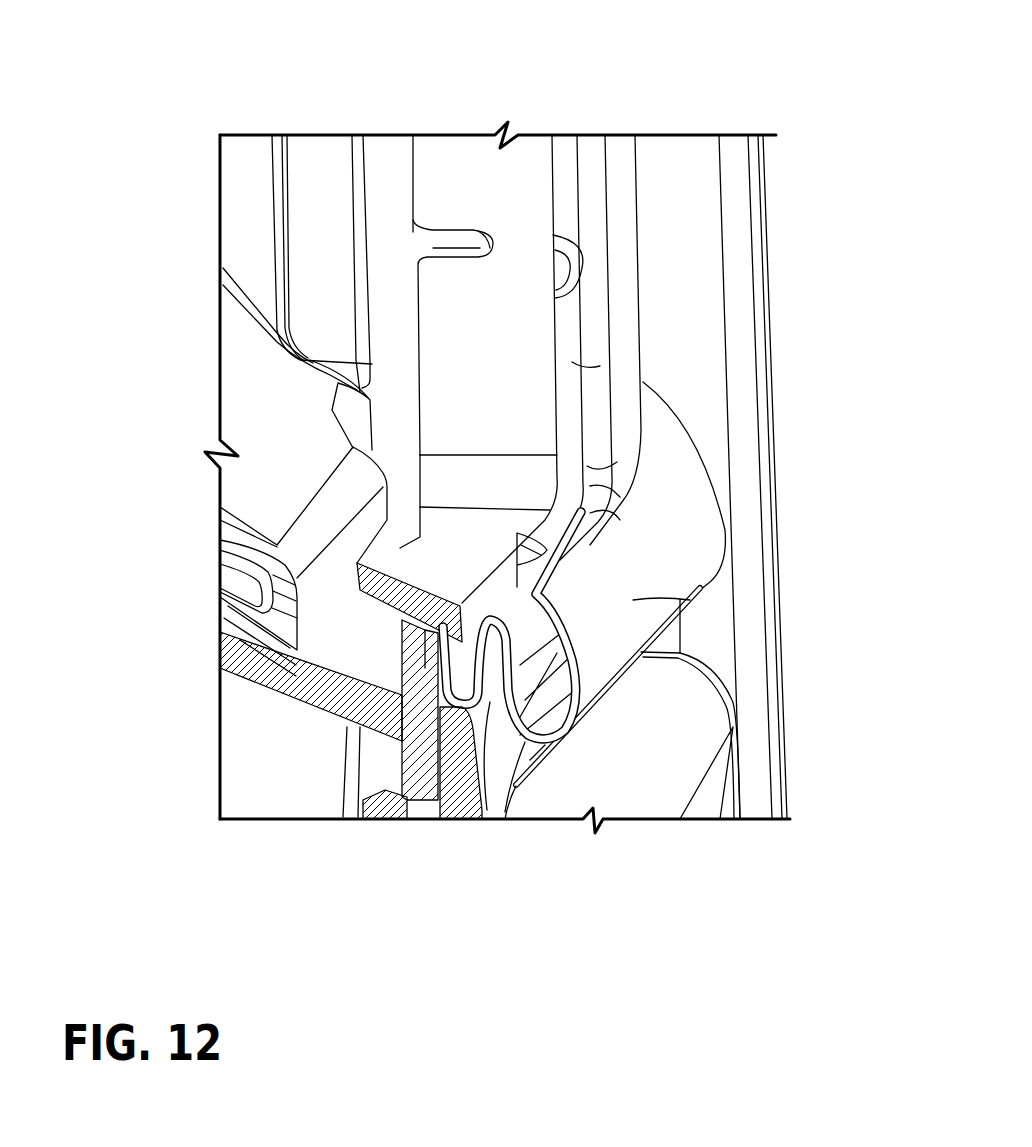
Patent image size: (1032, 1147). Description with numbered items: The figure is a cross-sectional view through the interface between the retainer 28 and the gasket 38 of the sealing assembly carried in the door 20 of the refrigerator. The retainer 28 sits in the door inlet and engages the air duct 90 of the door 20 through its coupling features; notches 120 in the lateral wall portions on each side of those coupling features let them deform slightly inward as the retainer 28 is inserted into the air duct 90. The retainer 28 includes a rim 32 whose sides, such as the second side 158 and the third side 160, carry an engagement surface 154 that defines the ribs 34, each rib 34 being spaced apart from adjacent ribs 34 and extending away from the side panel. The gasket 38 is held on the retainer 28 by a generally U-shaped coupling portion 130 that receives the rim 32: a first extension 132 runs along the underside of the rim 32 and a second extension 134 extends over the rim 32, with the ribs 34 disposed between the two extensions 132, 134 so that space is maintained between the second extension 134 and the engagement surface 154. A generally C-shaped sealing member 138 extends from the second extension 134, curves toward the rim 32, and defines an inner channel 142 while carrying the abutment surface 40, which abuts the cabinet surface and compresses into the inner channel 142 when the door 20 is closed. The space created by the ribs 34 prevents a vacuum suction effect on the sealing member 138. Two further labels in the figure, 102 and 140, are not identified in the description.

The door 20 is at (743, 193).
The retainer 28 is at (412, 556).
The rim 32 is at (567, 172).
The ribs 34 is at (561, 255).
The gasket 38 is at (657, 787).
The abutment surface 40 is at (667, 560).
The air duct 90 is at (335, 690).
The housing 102 is at (448, 165).
The notches 120 is at (432, 245).
The coupling portion 130 is at (478, 812).
The first extension 132 is at (460, 653).
The second extension 134 is at (512, 770).
The sealing member 138 is at (633, 600).
The connecting flange 140 is at (553, 424).
The inner channel 142 is at (553, 660).
The engagement surface 154 is at (600, 366).
The second side 158 is at (435, 712).
The third side 160 is at (573, 409).